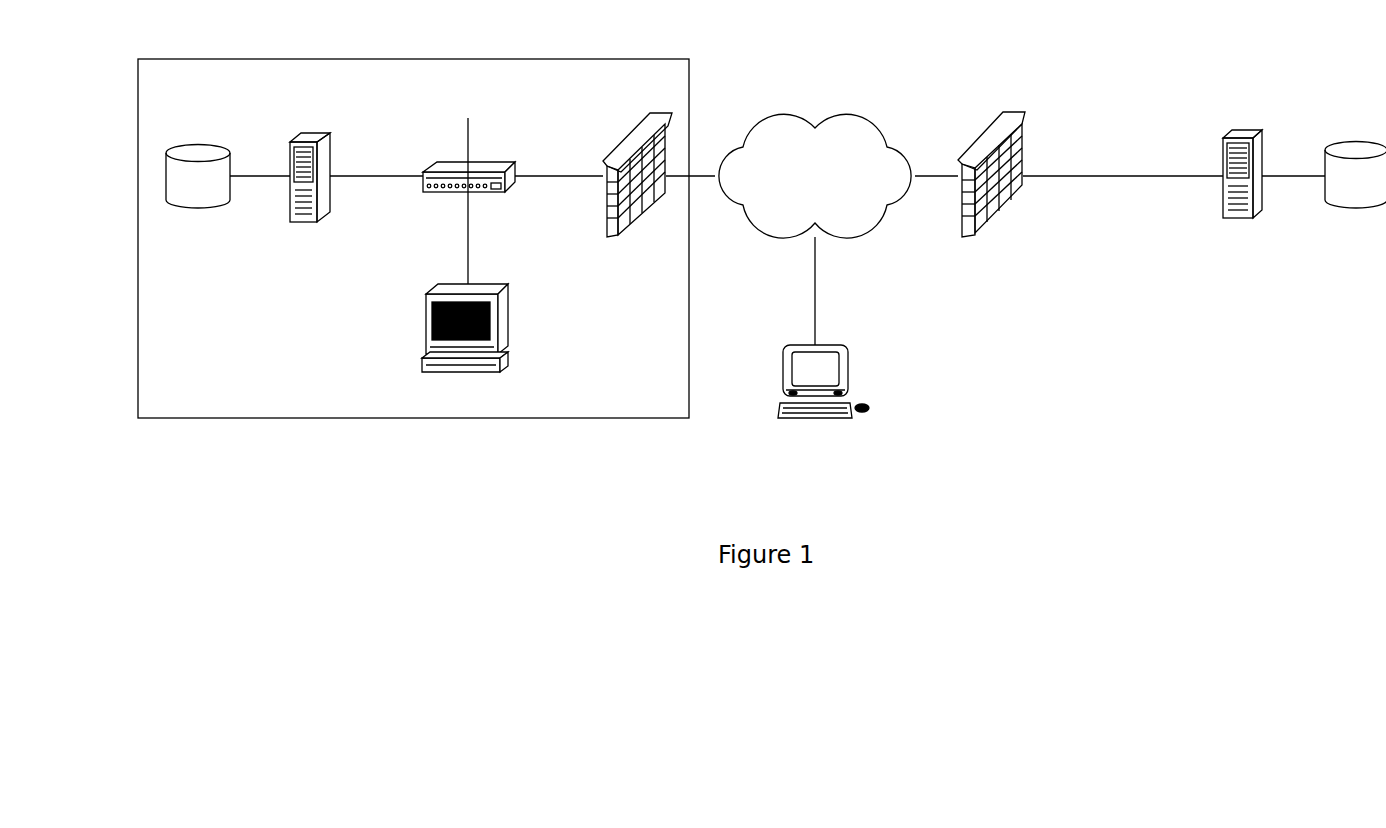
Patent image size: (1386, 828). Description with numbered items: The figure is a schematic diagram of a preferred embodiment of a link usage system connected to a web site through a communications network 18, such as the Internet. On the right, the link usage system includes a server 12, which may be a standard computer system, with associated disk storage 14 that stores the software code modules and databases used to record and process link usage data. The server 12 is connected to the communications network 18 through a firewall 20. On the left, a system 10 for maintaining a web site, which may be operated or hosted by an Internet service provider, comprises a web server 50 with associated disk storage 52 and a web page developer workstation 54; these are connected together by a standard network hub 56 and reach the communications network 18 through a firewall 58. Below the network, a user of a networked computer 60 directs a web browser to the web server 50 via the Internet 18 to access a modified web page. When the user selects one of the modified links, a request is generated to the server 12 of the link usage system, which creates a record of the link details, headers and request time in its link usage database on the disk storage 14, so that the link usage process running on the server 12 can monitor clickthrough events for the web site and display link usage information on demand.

The system for maintaining a web site 10 is at (388, 59).
The server 12 is at (1247, 130).
The disk storage 14 is at (1355, 175).
The communications network 18 is at (815, 176).
The firewall 20 is at (1000, 132).
The web server 50 is at (312, 135).
The disk storage 52 is at (198, 177).
The web page developer workstation 54 is at (508, 318).
The network hub 56 is at (469, 188).
The firewall 58 is at (640, 133).
The networked computer 60 is at (850, 368).